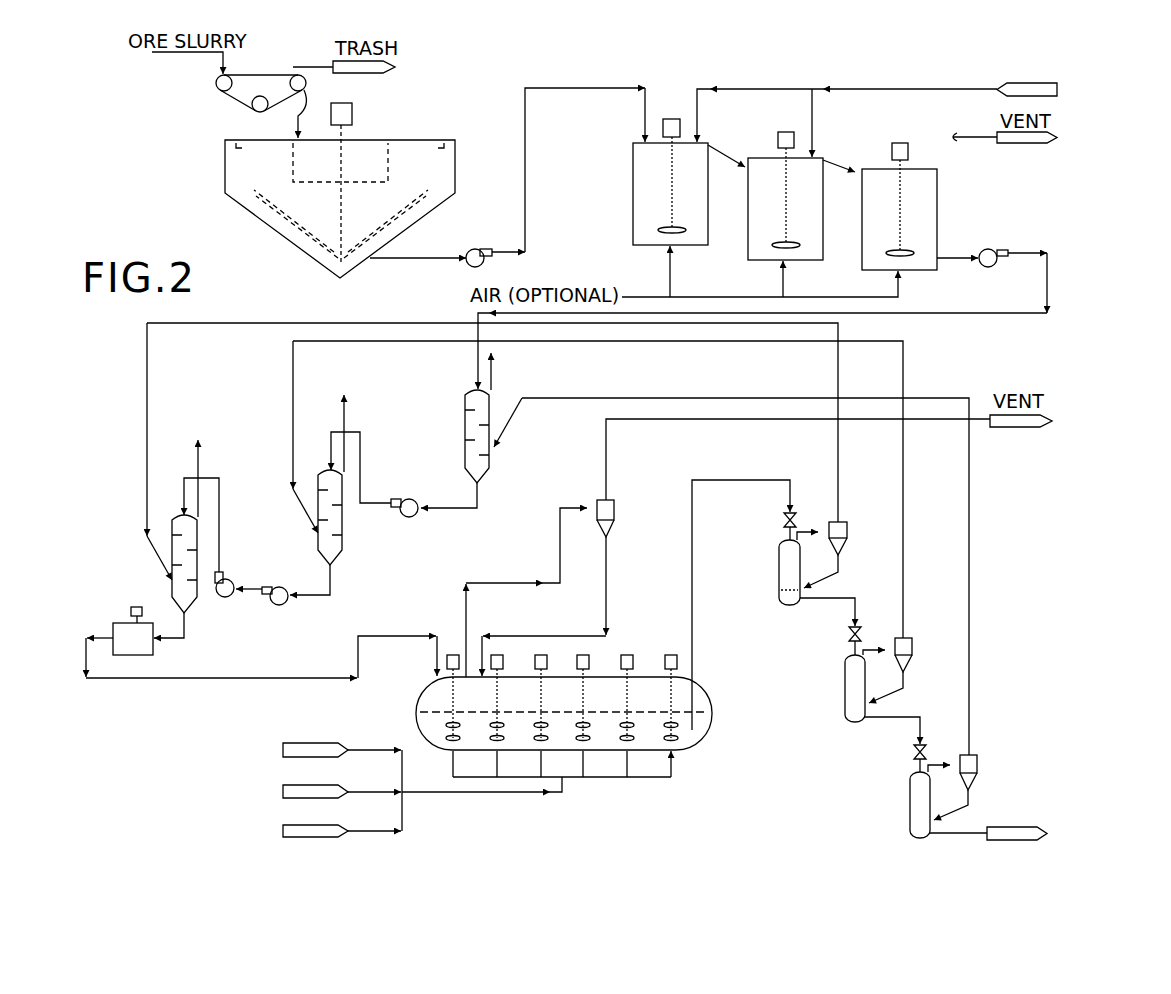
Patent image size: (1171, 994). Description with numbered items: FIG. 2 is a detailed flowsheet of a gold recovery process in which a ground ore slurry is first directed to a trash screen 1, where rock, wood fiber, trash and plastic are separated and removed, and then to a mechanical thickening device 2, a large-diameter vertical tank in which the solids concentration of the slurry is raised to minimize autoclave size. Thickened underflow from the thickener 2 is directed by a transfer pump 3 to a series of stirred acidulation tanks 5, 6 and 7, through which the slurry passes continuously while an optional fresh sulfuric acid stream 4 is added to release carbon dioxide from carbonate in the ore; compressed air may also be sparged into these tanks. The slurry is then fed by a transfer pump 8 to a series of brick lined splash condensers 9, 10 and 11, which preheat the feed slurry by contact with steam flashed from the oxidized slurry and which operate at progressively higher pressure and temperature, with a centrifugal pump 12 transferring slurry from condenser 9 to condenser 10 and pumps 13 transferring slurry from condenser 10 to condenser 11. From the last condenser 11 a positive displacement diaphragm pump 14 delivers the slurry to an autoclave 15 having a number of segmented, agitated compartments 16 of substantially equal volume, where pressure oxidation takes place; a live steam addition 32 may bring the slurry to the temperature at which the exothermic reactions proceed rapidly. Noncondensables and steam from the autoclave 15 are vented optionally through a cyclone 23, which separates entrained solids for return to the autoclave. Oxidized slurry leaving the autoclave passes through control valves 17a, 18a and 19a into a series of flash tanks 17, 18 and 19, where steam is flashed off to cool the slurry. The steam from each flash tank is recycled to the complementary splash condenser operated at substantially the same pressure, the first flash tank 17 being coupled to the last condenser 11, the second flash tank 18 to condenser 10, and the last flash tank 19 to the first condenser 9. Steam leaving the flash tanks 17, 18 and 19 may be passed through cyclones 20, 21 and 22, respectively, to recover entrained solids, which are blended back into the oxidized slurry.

The trash screen 1 is at (235, 104).
The mechanical thickening device 2 is at (251, 236).
The transfer pump 3 is at (480, 245).
The fresh sulfuric acid stream 4 is at (923, 92).
The stirred acidulation tank 5 is at (633, 215).
The stirred acidulation tank 6 is at (760, 150).
The stirred acidulation tank 7 is at (937, 212).
The transfer pump 8 is at (982, 243).
The splash condenser 9 is at (465, 390).
The splash condenser 10 is at (320, 470).
The splash condenser 11 is at (178, 517).
The centrifugal pump 12 is at (412, 523).
The centrifugal pumps 13 is at (287, 604).
The positive displacement diaphragm pump 14 is at (150, 663).
The autoclave 15 is at (574, 660).
The autoclave compartments with agitators 16 is at (562, 747).
The first flash tank 17 is at (773, 568).
The control valve 17a is at (785, 523).
The second flash tank 18 is at (863, 697).
The control valve 18a is at (847, 637).
The last flash tank 19 is at (977, 802).
The control valve 19a is at (886, 758).
The cyclone 20 is at (847, 533).
The cyclone 21 is at (913, 648).
The cyclone 22 is at (1015, 773).
The cyclone 23 is at (617, 527).
The steam feed line 32 is at (392, 778).